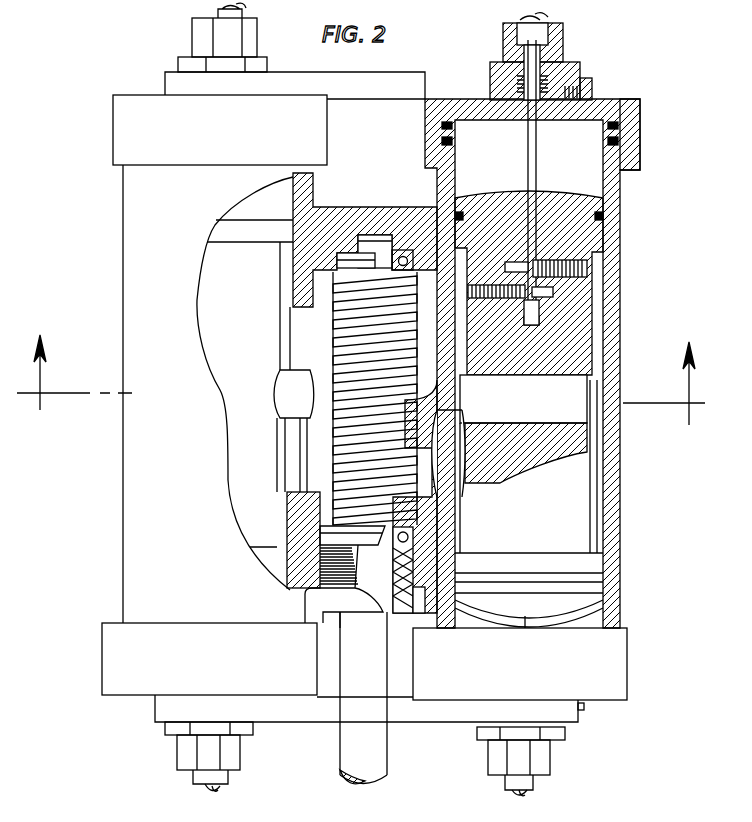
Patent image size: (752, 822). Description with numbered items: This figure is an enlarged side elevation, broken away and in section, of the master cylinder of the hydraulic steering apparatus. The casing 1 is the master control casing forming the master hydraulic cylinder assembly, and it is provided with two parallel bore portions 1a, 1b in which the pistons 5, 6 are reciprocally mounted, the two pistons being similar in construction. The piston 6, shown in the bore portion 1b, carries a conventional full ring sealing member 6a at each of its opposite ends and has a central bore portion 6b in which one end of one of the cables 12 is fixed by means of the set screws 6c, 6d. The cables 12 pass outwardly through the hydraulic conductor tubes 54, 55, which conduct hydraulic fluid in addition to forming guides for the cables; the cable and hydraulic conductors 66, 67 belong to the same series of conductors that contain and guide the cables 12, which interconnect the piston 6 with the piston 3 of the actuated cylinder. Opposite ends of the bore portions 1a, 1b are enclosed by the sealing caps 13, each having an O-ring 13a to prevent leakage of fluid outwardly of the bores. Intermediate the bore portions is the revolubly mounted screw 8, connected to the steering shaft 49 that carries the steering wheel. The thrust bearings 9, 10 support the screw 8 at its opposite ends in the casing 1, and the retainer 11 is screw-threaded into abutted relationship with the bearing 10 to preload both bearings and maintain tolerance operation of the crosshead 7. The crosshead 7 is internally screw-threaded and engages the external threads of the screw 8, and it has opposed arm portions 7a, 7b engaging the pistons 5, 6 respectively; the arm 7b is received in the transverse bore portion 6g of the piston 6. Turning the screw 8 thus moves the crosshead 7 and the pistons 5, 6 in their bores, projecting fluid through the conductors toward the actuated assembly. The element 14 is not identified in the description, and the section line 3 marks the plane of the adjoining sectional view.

The casing 1 is at (606, 492).
The bore portion 1a is at (290, 287).
The bore portion 1b is at (600, 292).
The piston 3 is at (362, 386).
The piston 5 is at (237, 235).
The piston 6 is at (578, 318).
The full ring sealing member 6a is at (598, 221).
The central bore portion 6b is at (536, 242).
The set screw 6c is at (509, 305).
The set screw 6d is at (588, 268).
The transverse bore portion 6g is at (540, 443).
The crosshead 7 is at (448, 412).
The arm portion 7a is at (283, 388).
The arm portion 7b is at (563, 388).
The screw 8 is at (337, 470).
The thrust bearing 9 is at (348, 256).
The thrust bearing 10 is at (330, 533).
The retainer 11 is at (333, 600).
The cable 12 is at (538, 152).
The sealing cap 13 is at (303, 131).
The O-ring 13a is at (648, 112).
The mounting plate 14 is at (400, 74).
The steering shaft 49 is at (347, 756).
The hydraulic conductor tube 54 is at (528, 786).
The hydraulic conductor tube 55 is at (545, 15).
The cable and hydraulic conductor 66 is at (195, 20).
The cable and hydraulic conductor 67 is at (193, 776).